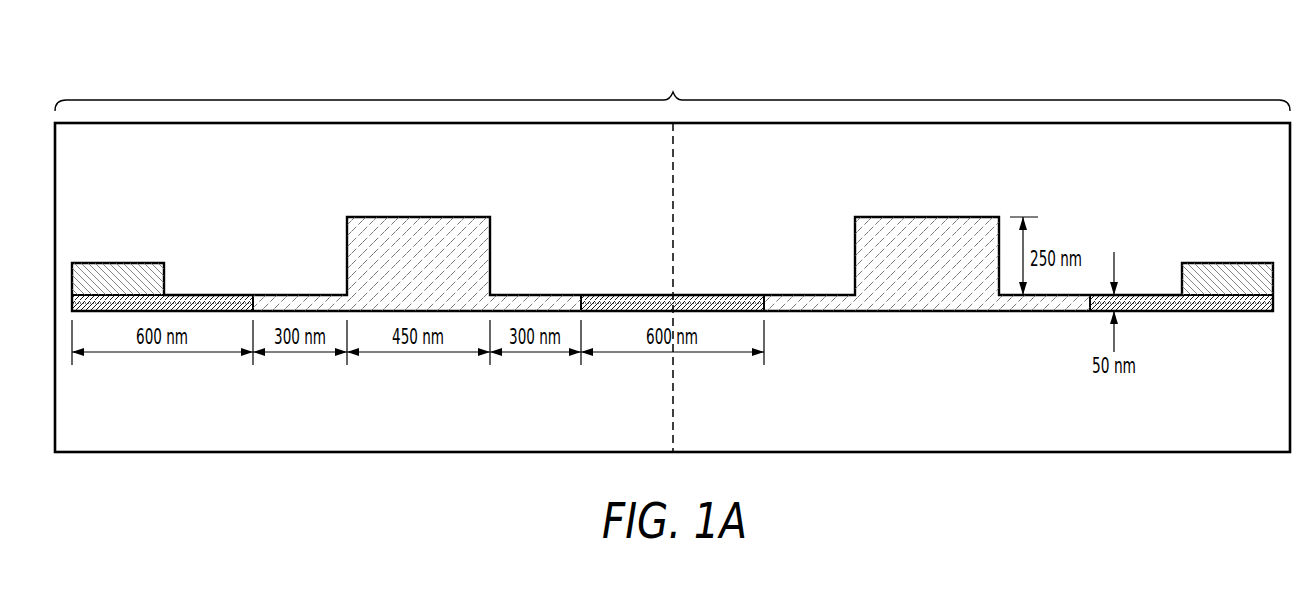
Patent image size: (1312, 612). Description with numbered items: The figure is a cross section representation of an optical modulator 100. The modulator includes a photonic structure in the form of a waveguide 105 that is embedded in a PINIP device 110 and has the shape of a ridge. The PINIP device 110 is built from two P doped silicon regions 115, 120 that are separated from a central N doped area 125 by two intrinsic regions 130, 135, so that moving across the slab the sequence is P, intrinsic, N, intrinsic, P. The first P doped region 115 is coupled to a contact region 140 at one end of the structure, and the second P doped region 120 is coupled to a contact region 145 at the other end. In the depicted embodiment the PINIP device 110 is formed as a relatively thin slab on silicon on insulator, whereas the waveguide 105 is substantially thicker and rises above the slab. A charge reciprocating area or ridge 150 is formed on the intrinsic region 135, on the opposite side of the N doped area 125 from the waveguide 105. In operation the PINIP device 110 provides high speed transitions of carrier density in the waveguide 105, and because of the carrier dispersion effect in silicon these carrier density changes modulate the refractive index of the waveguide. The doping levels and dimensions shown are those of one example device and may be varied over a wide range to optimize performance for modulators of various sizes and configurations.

The optical modulator 100 is at (1200, 50).
The waveguide 105 is at (418, 217).
The PINIP device 110 is at (672, 88).
The P doped silicon region 115 is at (208, 295).
The P doped silicon region 120 is at (1156, 312).
The N doped area 125 is at (714, 295).
The intrinsic region 130 is at (534, 295).
The intrinsic region 135 is at (814, 312).
The contact region 140 is at (118, 263).
The contact region 145 is at (1228, 263).
The charge reciprocating area or ridge 150 is at (927, 217).